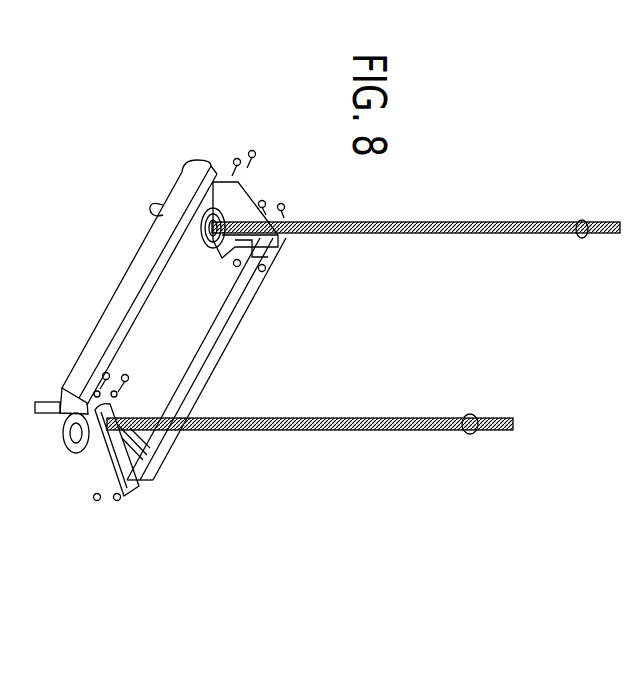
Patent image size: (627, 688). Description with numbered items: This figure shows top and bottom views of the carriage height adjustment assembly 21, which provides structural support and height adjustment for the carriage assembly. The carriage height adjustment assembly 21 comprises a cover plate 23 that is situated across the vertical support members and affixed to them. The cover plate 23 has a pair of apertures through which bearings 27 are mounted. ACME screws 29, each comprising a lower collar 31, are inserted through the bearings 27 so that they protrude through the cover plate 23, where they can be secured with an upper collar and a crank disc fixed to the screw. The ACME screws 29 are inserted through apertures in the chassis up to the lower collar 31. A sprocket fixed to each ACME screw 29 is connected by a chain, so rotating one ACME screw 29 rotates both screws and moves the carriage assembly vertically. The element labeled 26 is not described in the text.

The carriage height adjustment assembly 21 is at (332, 488).
The cover plate 23 is at (158, 450).
The mounting plate 26 is at (203, 220).
The bearing 27 is at (204, 208).
The ACME screw 29 is at (447, 222).
The lower collar 31 is at (580, 218).